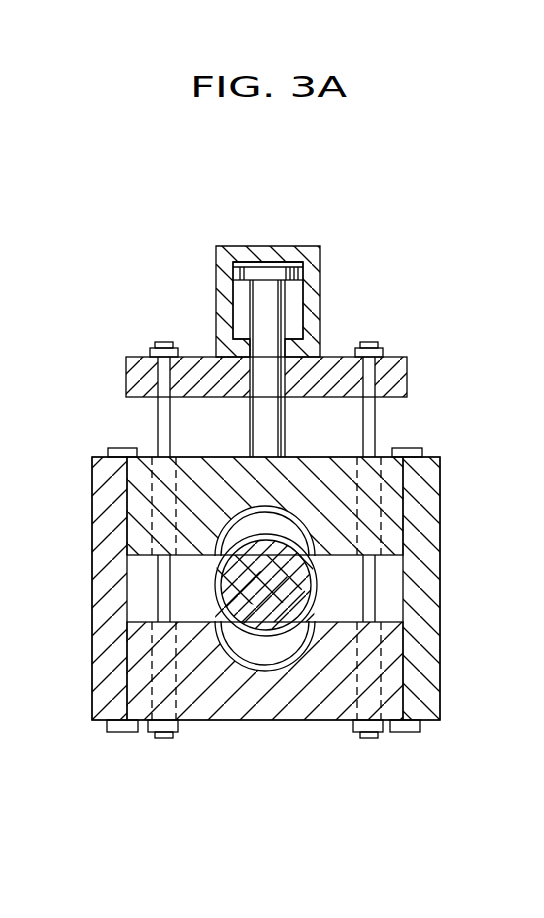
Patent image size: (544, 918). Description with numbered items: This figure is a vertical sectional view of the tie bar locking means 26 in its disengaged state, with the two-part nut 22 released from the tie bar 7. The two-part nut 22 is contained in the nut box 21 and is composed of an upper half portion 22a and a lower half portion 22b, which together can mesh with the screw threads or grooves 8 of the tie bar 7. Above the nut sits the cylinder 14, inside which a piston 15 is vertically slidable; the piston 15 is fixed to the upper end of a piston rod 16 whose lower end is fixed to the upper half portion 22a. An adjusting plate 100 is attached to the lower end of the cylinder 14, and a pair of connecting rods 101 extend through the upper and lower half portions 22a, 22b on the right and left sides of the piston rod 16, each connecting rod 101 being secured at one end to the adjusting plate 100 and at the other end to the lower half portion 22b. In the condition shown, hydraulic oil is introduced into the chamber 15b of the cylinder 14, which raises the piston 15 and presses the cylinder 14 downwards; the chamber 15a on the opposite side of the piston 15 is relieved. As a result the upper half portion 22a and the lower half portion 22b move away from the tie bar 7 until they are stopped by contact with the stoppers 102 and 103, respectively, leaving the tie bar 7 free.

The tie bar 7 is at (281, 622).
The screw threads or grooves 8 is at (248, 638).
The cylinder 14 is at (248, 250).
The piston 15 is at (305, 268).
The chamber 15a is at (285, 252).
The chamber 15b is at (297, 300).
The piston rod 16 is at (283, 431).
The nut box 21 is at (102, 543).
The two-part nut 22 is at (272, 613).
The upper half portion 22a is at (198, 468).
The lower half portion 22b is at (222, 702).
The tie bar locking means 26 is at (175, 291).
The adjusting plate 100 is at (405, 375).
The connecting rod 101 is at (158, 415).
The stopper 102 is at (120, 447).
The stopper 103 is at (122, 732).